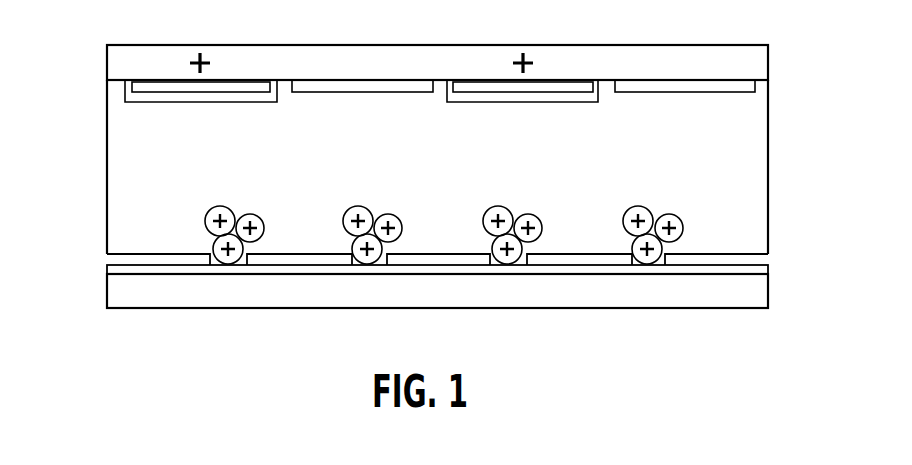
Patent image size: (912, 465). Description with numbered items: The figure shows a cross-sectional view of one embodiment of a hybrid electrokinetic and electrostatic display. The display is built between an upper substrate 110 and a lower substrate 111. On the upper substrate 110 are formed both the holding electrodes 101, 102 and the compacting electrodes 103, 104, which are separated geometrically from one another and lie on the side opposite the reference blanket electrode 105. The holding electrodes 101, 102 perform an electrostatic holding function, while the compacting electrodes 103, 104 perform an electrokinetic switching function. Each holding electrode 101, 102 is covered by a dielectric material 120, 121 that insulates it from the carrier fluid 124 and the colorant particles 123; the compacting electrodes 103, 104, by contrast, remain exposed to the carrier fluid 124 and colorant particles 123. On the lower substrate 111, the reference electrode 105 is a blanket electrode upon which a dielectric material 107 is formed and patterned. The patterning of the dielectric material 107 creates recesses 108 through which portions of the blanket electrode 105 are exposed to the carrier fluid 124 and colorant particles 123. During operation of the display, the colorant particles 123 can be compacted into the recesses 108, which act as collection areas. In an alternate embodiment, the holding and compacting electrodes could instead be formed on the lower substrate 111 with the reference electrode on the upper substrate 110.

The holding electrode 101 is at (132, 85).
The holding electrode 102 is at (470, 83).
The compacting electrode 103 is at (363, 83).
The compacting electrode 104 is at (737, 87).
The reference blanket electrode 105 is at (762, 270).
The dielectric material 107 is at (762, 260).
The recess 108 is at (660, 263).
The upper substrate 110 is at (758, 63).
The lower substrate 111 is at (752, 303).
The dielectric material 120 is at (138, 98).
The dielectric material 121 is at (460, 98).
The colorant particles 123 is at (683, 222).
The carrier fluid 124 is at (717, 143).